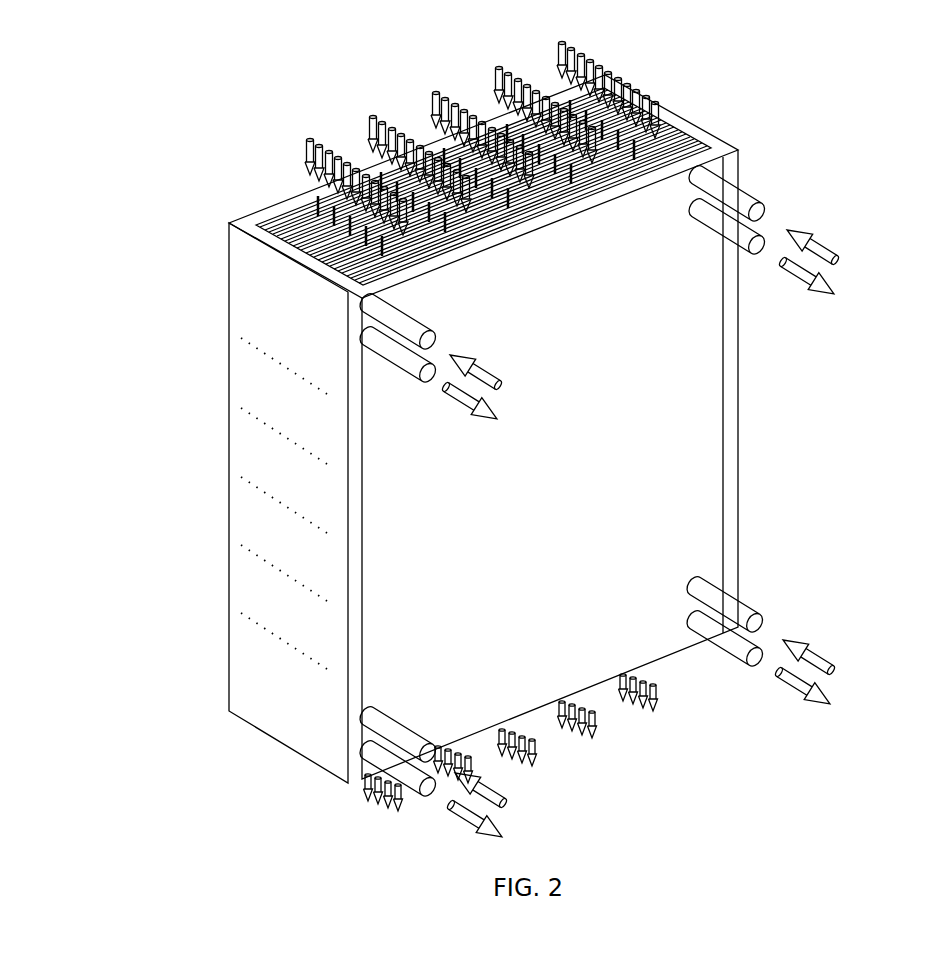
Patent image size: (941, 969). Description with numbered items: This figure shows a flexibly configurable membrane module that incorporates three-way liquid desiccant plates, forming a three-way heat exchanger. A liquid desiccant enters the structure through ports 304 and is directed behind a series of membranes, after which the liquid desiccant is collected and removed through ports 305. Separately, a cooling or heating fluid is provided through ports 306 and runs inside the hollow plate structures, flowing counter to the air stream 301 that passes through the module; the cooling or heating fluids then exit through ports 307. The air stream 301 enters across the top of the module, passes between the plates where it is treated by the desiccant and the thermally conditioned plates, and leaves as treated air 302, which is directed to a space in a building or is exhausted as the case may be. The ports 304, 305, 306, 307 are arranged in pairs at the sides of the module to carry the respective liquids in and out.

The air stream 301 is at (295, 145).
The treated air 302 is at (532, 762).
The ports 304 is at (757, 210).
The ports 305 is at (755, 657).
The ports 306 is at (755, 623).
The ports 307 is at (757, 243).